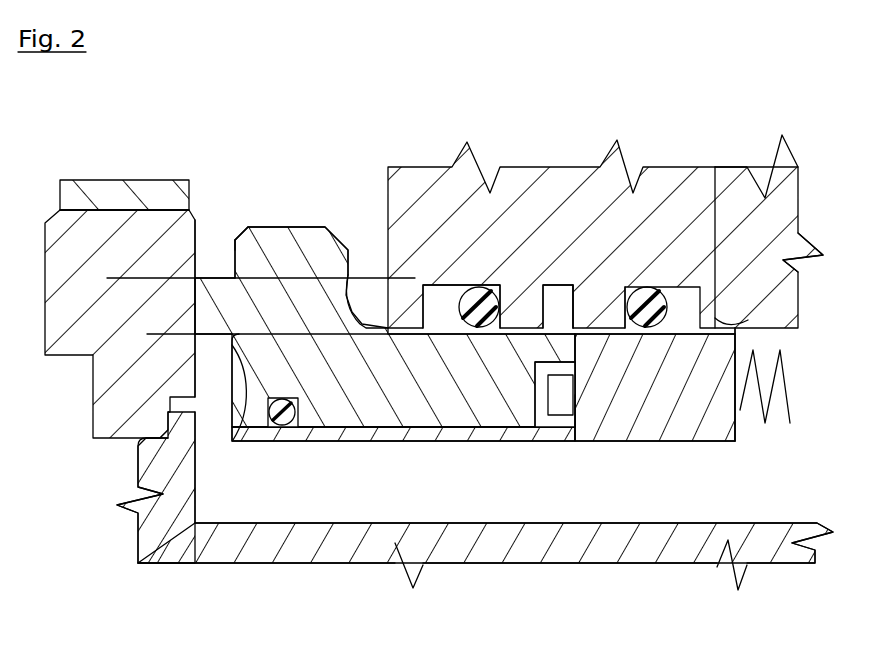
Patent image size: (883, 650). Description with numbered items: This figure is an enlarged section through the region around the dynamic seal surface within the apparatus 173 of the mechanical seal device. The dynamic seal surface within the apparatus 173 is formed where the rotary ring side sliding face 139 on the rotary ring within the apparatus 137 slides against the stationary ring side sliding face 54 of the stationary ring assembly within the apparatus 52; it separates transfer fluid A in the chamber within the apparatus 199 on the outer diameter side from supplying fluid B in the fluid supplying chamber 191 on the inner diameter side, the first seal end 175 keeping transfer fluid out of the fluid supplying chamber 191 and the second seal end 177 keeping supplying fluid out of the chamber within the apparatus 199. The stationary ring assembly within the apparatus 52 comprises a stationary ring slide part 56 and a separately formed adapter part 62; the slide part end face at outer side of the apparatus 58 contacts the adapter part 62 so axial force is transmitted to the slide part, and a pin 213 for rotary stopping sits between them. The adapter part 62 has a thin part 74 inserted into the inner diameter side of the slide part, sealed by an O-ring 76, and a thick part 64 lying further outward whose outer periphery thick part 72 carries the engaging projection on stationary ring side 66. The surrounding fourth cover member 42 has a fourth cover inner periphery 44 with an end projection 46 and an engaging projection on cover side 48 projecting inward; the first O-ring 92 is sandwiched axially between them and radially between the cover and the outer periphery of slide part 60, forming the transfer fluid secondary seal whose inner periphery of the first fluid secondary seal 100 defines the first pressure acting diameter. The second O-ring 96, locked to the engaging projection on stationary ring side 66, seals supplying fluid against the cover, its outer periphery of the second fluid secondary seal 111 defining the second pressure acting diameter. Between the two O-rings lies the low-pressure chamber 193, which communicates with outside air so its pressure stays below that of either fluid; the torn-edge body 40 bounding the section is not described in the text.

The housing 40 is at (786, 390).
The fourth cover member 42 is at (692, 198).
The fourth cover inner periphery 44 is at (800, 237).
The end projection 46 is at (394, 320).
The engaging projection on cover side 48 is at (522, 317).
The stationary ring assembly within the apparatus 52 is at (338, 383).
The stationary ring side sliding face 54 is at (197, 338).
The stationary ring slide part 56 is at (306, 250).
The slide part end face at outer side of the apparatus 58 is at (578, 363).
The outer periphery of slide part 60 is at (352, 292).
The adapter part 62 is at (658, 380).
The thick part 64 is at (719, 422).
The engaging projection on stationary ring side 66 is at (596, 334).
The outer periphery thick part 72 is at (748, 320).
The thin part 74 is at (372, 437).
The O-ring 76 is at (292, 430).
The first O-ring 92 is at (480, 285).
The second O-ring 96 is at (638, 287).
The inner periphery of the first fluid secondary seal 100 is at (490, 390).
The outer periphery of the second fluid secondary seal 111 is at (673, 280).
The rotary ring within the apparatus 137 is at (135, 233).
The rotary ring side sliding face 139 is at (226, 232).
The dynamic seal surface within the apparatus 173 is at (233, 270).
The first seal end 175 is at (203, 293).
The second seal end 177 is at (233, 443).
The fluid supplying chamber 191 is at (462, 515).
The low-pressure chamber 193 is at (557, 292).
The chamber within the apparatus 199 is at (58, 151).
The pin 213 is at (560, 398).